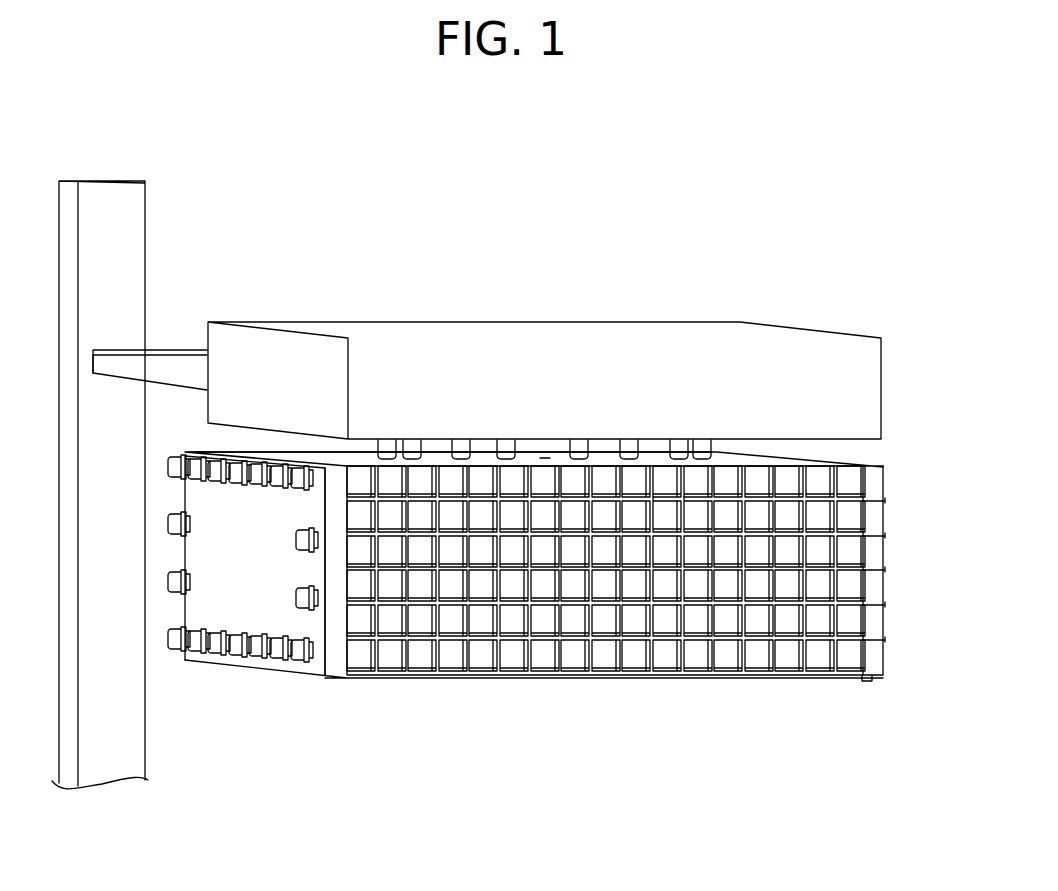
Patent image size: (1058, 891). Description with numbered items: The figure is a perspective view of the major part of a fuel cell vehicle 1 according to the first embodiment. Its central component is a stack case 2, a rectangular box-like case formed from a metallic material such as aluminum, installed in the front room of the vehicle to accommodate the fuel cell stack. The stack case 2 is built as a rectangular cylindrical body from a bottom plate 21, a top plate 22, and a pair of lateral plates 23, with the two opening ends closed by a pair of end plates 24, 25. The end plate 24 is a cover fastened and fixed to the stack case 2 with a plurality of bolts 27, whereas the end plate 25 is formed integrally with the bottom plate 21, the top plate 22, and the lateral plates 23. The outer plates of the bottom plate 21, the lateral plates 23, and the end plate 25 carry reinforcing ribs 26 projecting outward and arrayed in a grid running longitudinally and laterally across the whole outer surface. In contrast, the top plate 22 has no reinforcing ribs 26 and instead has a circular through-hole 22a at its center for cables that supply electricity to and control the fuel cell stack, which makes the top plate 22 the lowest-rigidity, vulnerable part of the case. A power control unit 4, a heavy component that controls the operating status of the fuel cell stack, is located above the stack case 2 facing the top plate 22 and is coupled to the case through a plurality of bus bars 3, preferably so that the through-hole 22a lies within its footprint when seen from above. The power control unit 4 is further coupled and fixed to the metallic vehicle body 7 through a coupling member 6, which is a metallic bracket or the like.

The fuel cell vehicle 1 is at (748, 216).
The stack case 2 is at (566, 612).
The bus bars 3 is at (590, 448).
The power control unit 4 is at (578, 330).
The coupling member 6 is at (158, 353).
The vehicle body 7 is at (126, 259).
The bottom plate 21 is at (488, 678).
The top plate 22 is at (742, 455).
The circular through-hole 22a is at (543, 457).
The lateral plates 23 is at (604, 584).
The end plate 24 is at (246, 598).
The end plate 25 is at (870, 518).
The reinforcing ribs 26 is at (728, 640).
The bolts 27 is at (238, 662).